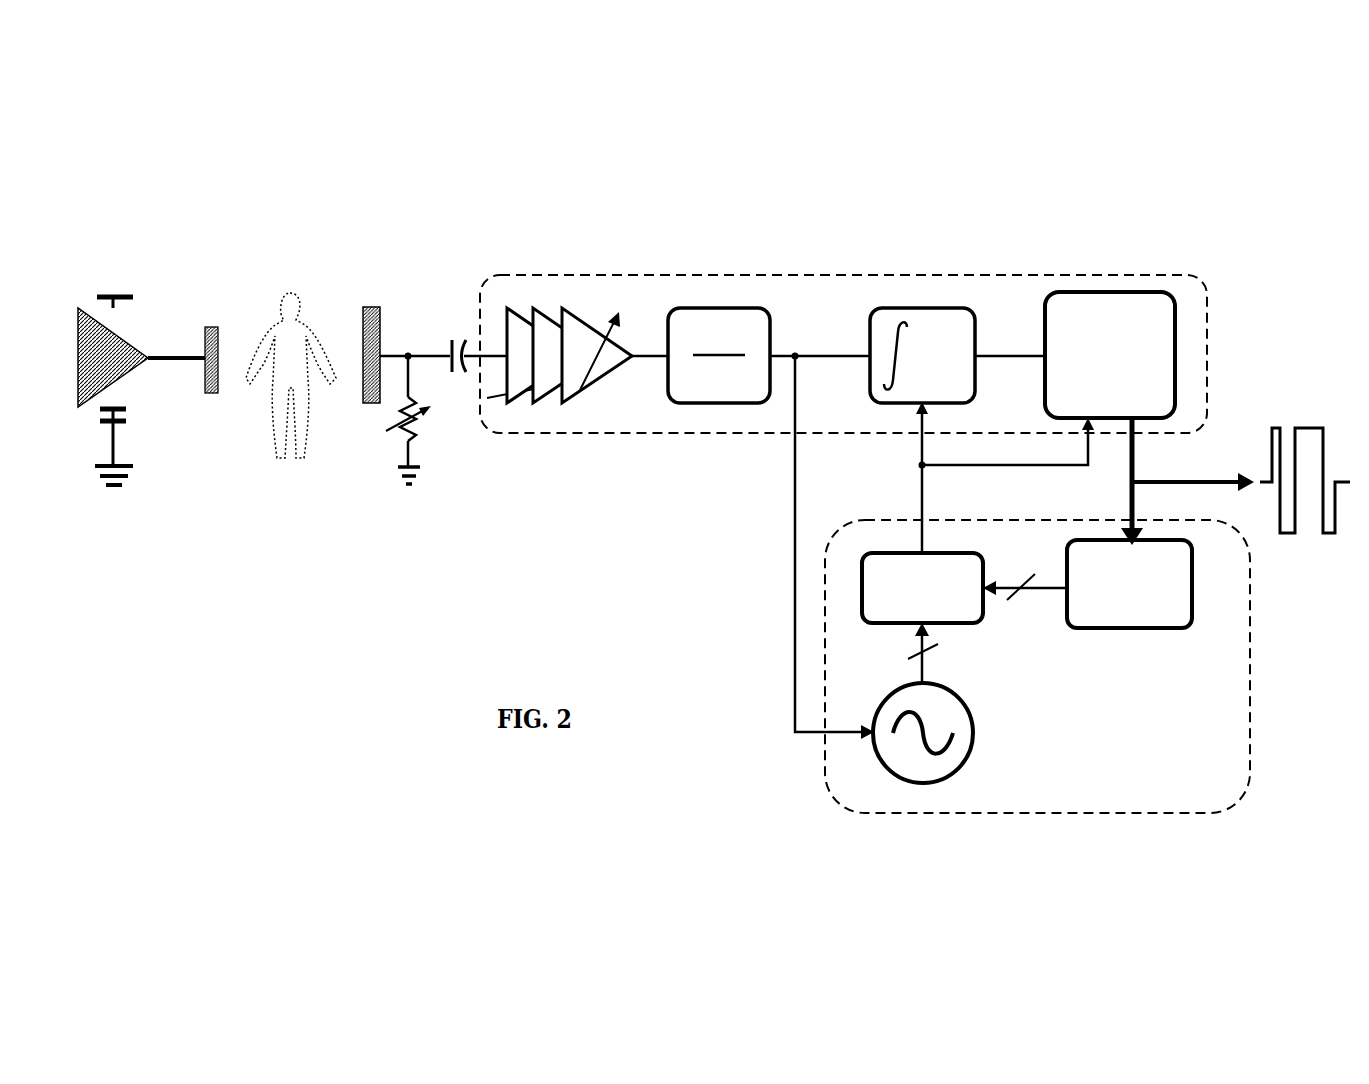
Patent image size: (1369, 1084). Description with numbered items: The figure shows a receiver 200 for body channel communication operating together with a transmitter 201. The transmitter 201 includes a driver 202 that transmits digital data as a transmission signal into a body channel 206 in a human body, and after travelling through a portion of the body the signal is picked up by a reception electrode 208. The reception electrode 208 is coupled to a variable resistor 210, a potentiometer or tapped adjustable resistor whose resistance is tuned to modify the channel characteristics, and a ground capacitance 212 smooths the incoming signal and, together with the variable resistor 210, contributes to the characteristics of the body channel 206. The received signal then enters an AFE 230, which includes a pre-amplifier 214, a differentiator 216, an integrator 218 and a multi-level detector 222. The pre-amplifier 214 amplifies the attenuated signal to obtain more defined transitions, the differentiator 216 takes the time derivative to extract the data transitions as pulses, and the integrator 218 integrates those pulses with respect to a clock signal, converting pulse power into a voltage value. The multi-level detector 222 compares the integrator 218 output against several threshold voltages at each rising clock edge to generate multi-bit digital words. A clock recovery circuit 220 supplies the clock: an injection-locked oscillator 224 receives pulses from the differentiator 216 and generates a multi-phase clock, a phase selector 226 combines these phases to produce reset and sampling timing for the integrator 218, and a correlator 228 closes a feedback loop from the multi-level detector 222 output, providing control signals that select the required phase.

The receiver 200 is at (472, 226).
The transmitter 201 is at (95, 265).
The driver 202 is at (145, 362).
The body channel 206 is at (278, 458).
The reception electrode 208 is at (372, 405).
The variable resistor 210 is at (415, 430).
The ground capacitance 212 is at (452, 338).
The pre-amplifier 214 is at (545, 402).
The differentiator 216 is at (705, 405).
The integrator 218 is at (908, 306).
The clock recovery circuit 220 is at (823, 745).
The multi-level detector 222 is at (1107, 291).
The injection-locked oscillator 224 is at (965, 700).
The phase selector 226 is at (985, 618).
The correlator 228 is at (1115, 630).
The AFE 230 is at (620, 273).